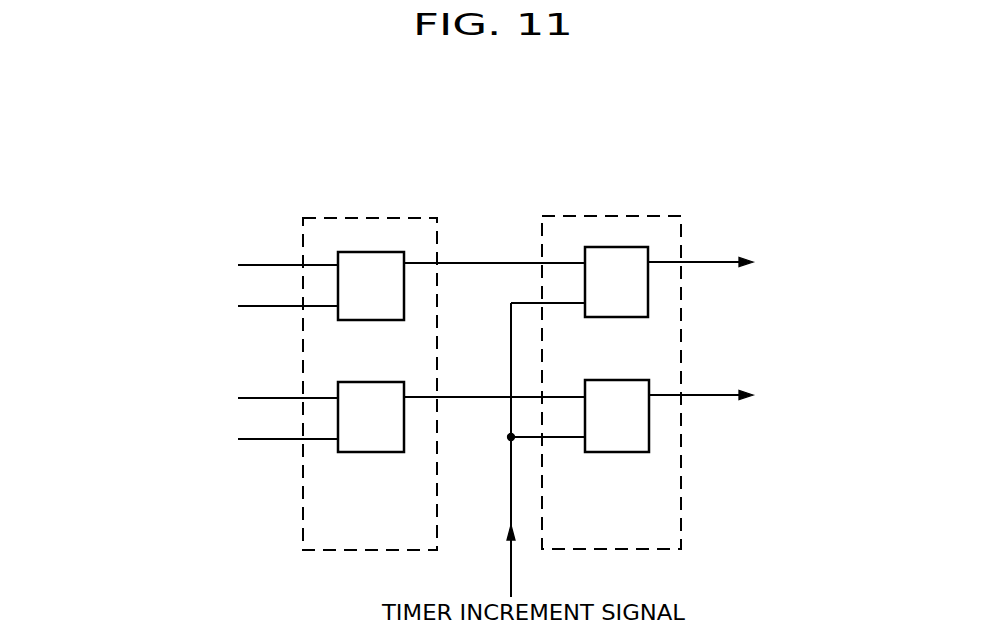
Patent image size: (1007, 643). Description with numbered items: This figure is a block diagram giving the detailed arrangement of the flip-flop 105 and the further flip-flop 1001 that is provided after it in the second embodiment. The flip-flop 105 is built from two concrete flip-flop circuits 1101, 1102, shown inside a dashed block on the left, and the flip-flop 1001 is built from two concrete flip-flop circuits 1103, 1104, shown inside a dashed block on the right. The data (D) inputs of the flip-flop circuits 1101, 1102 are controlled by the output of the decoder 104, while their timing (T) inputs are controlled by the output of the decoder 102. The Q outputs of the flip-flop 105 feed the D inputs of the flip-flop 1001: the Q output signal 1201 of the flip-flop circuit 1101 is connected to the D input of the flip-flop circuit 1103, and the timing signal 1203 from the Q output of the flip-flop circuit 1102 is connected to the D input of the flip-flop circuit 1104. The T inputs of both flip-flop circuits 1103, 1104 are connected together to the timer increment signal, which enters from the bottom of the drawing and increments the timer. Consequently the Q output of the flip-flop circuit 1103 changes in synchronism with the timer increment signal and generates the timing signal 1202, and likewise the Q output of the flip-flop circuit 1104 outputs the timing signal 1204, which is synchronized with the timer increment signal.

The decoder 102 is at (190, 379).
The decoder 104 is at (190, 331).
The flip-flop 105 is at (390, 217).
The flip-flop 1001 is at (600, 215).
The flip-flop circuit 1101 is at (397, 252).
The flip-flop circuit 1102 is at (383, 382).
The flip-flop circuit 1103 is at (647, 247).
The flip-flop circuit 1104 is at (618, 380).
The Q output signal 1201 is at (467, 263).
The timing signal 1202 is at (713, 260).
The timing signal 1203 is at (468, 397).
The timing signal 1204 is at (713, 393).